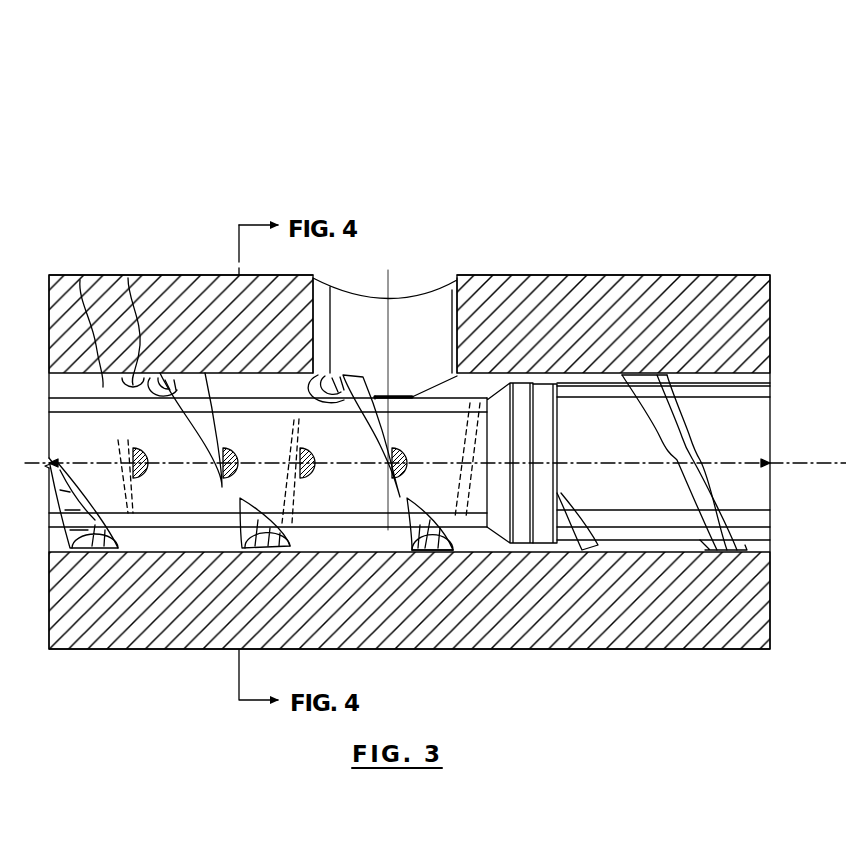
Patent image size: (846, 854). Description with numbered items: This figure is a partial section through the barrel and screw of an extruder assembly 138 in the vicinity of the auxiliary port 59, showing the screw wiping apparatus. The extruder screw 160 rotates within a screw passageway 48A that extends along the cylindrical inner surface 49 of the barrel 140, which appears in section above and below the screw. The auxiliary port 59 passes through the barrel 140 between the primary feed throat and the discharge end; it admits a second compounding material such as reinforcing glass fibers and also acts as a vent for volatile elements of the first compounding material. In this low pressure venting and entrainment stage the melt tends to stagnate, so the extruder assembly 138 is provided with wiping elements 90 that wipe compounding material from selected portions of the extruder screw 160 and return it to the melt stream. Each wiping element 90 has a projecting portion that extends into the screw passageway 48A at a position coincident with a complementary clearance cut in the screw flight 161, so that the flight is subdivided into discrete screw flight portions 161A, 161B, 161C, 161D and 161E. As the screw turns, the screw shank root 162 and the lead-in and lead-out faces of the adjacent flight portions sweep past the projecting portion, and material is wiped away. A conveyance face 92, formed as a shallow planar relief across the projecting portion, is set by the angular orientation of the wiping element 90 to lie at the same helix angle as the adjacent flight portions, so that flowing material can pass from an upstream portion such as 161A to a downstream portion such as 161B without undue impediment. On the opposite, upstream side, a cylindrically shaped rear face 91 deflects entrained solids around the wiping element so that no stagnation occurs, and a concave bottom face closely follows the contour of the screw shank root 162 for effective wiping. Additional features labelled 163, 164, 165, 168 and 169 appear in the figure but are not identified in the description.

The extruder assembly 138 is at (345, 185).
The housing 140 is at (675, 302).
The auxiliary port 59 is at (440, 278).
The screw passageway 48A is at (80, 280).
The cylindrical inner surface 49 is at (128, 278).
The extruder screw 160 is at (745, 425).
The screw flight 161 is at (735, 495).
The screw flight portion 161A is at (398, 548).
The screw flight portion 161B is at (344, 363).
The screw flight portion 161C is at (288, 552).
The screw flight portion 161D is at (205, 388).
The screw flight portion 161E is at (127, 546).
The screw shank root 162 is at (456, 378).
The leading edge 163 is at (380, 393).
The blade scoop 164 is at (322, 393).
The blade foot 165 is at (440, 555).
The hub collar 168 is at (540, 548).
The hub 169 is at (516, 548).
The wiping element 90 is at (412, 466).
The rear face 91 is at (407, 455).
The conveyance face 92 is at (387, 469).